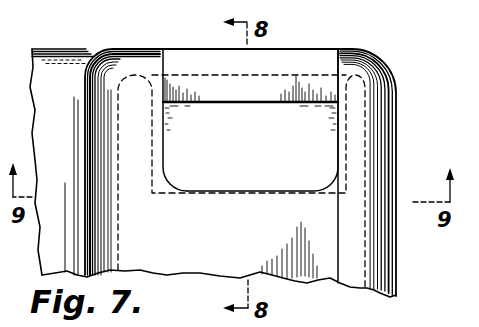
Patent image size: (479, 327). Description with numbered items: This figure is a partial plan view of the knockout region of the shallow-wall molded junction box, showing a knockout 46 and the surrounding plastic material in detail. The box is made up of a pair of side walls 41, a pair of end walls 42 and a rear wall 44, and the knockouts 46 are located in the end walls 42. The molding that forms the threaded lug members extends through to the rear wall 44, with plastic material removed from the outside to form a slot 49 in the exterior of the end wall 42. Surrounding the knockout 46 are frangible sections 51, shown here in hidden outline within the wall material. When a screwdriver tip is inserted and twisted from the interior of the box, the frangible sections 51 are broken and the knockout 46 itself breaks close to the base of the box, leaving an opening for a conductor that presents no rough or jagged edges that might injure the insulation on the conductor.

The side wall 41 is at (395, 228).
The end wall 42 is at (340, 257).
The rear wall 44 is at (134, 49).
The knockout 46 is at (272, 162).
The slot 49 is at (50, 67).
The frangible section 51 is at (153, 138).